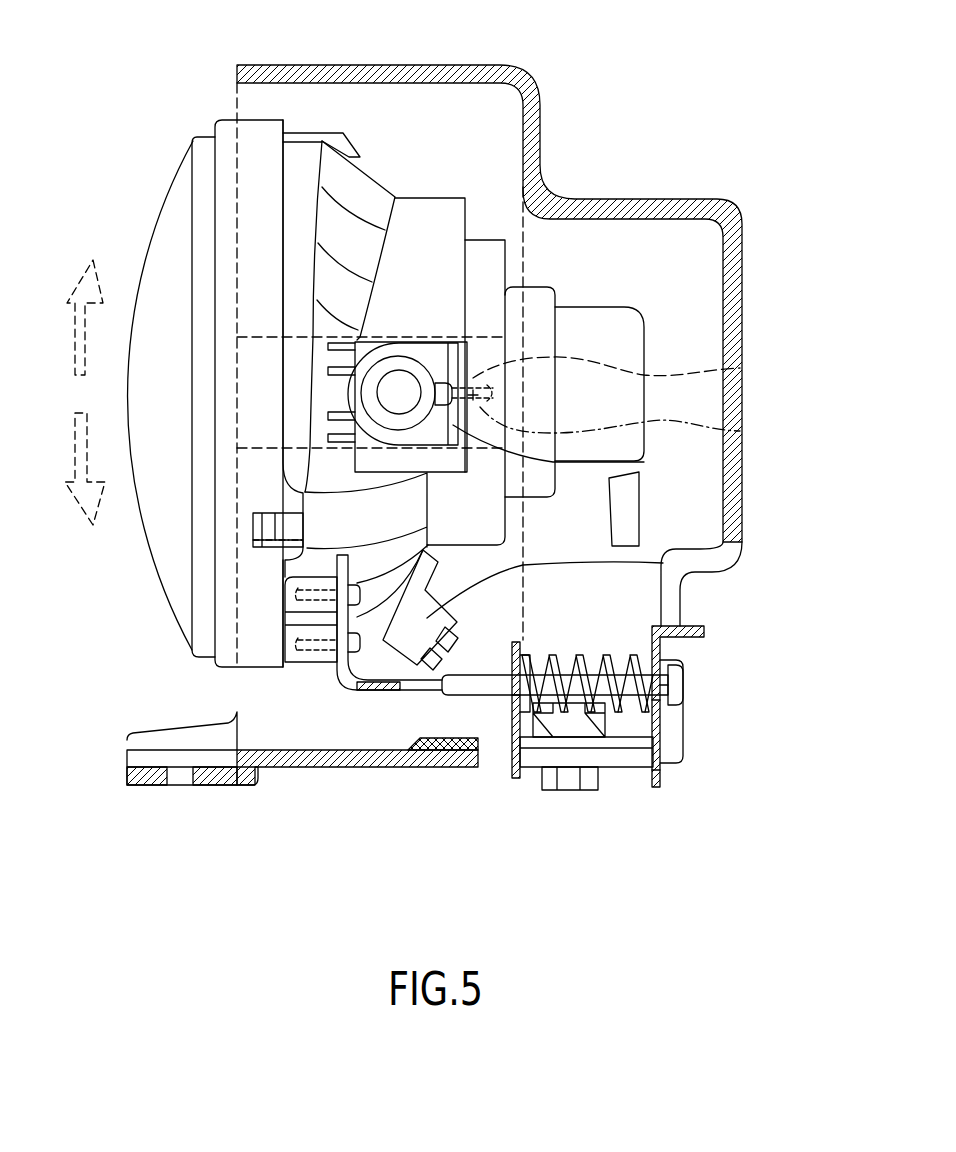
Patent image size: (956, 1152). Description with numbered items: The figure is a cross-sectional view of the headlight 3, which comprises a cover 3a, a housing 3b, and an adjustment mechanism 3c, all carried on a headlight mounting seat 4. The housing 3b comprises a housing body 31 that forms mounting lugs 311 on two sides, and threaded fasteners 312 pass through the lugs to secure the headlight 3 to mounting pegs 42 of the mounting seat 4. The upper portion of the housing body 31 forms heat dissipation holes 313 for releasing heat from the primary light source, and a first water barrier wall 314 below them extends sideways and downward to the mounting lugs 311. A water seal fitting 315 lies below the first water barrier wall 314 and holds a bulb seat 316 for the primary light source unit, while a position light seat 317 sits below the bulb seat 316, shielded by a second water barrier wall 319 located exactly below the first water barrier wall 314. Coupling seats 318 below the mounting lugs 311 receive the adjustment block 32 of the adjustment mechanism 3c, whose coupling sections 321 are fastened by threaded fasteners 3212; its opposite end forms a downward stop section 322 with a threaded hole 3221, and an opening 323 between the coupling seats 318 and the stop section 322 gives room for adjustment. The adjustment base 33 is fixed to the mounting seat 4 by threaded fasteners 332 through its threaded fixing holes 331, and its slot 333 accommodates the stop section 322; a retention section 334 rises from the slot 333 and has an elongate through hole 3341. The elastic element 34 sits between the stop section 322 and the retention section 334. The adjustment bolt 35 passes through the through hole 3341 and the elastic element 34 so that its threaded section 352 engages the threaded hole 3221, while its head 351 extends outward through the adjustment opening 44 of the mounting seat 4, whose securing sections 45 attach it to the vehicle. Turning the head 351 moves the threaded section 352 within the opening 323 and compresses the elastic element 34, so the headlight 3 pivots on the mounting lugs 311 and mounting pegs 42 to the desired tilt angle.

The headlight 3 is at (148, 160).
The cover 3a is at (162, 232).
The housing 3b is at (385, 163).
The adjustment mechanism 3c is at (660, 792).
The headlight mounting seat 4 is at (742, 253).
The housing body 31 is at (310, 115).
The mounting lugs 311 is at (650, 466).
The threaded fasteners 312 is at (740, 431).
The heat dissipation holes 313 is at (363, 187).
The first water barrier wall 314 is at (432, 218).
The water seal fitting 315 is at (485, 252).
The bulb seat 316 is at (603, 327).
The position light seat 317 is at (663, 563).
The coupling seats 318 is at (307, 655).
The second water barrier wall 319 is at (385, 620).
The adjustment block 32 is at (367, 682).
The coupling sections 321 is at (340, 561).
The threaded fasteners 3212 is at (298, 645).
The stop section 322 is at (517, 782).
The threaded hole 3221 is at (510, 695).
The opening 323 is at (418, 684).
The adjustment base 33 is at (428, 742).
The threaded fixing holes 331 is at (587, 725).
The threaded fasteners 332 is at (577, 792).
The slot 333 is at (553, 740).
The retention section 334 is at (662, 775).
The elongate through hole 3341 is at (661, 707).
The elastic element 34 is at (674, 648).
The adjustment bolt 35 is at (690, 695).
The head 351 is at (684, 679).
The threaded section 352 is at (466, 689).
The mounting pegs 42 is at (740, 366).
The adjustment opening 44 is at (669, 600).
The securing sections 45 is at (180, 777).